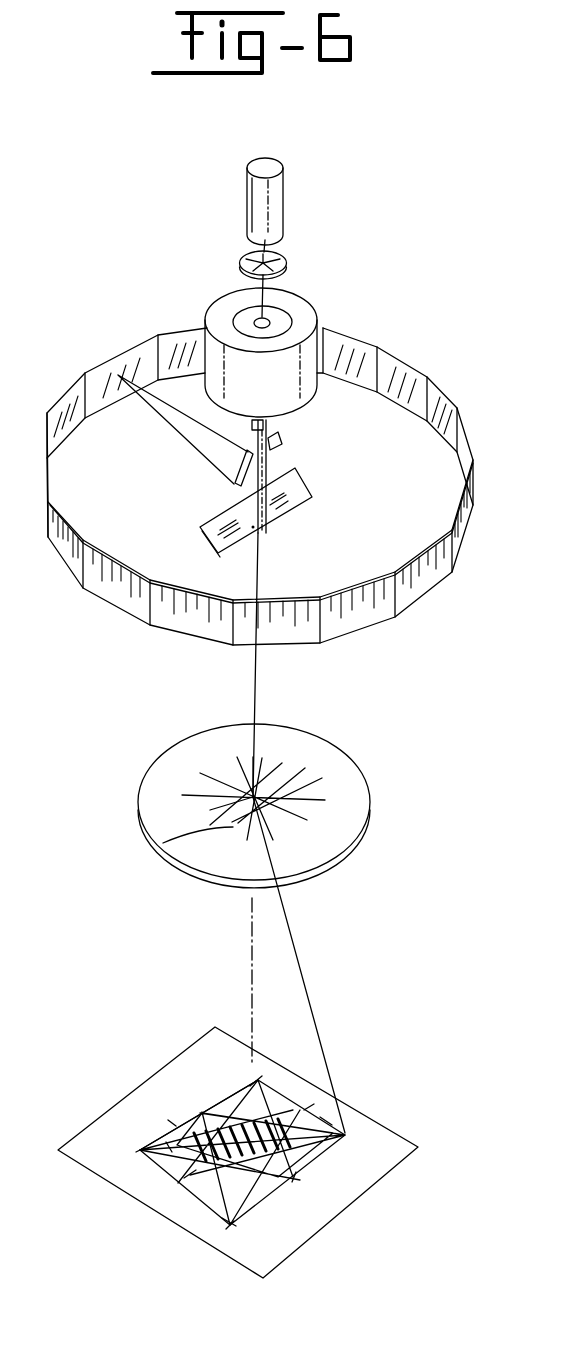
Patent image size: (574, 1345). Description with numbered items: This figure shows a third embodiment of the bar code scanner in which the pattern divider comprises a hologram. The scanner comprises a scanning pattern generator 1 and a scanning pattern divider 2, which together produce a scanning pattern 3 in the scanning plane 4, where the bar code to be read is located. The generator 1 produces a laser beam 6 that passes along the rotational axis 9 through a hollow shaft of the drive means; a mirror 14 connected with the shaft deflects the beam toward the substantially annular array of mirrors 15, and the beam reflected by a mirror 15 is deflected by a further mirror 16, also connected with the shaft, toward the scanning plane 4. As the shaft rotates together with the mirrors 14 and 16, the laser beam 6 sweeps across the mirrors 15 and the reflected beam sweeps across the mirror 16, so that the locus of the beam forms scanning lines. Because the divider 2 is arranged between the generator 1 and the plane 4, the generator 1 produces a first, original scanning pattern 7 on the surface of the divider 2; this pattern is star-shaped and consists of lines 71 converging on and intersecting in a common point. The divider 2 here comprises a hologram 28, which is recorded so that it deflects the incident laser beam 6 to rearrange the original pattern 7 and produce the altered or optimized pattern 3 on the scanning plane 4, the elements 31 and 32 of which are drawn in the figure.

The scanning pattern generator 1 is at (452, 371).
The annular array of mirrors 15 is at (90, 593).
The mirror 14 is at (277, 443).
The mirror 16 is at (297, 500).
The laser beam 6 is at (175, 432).
The scanning pattern divider 2 is at (360, 753).
The hologram 28 is at (343, 855).
The original scanning pattern 7 is at (200, 785).
The lines 71 is at (200, 813).
The rotational axis 9 is at (248, 950).
The scanning plane 4 is at (347, 1192).
The scanning pattern 3 is at (172, 1180).
The scan line 31 is at (190, 1127).
The pattern end points 32 is at (140, 1150).